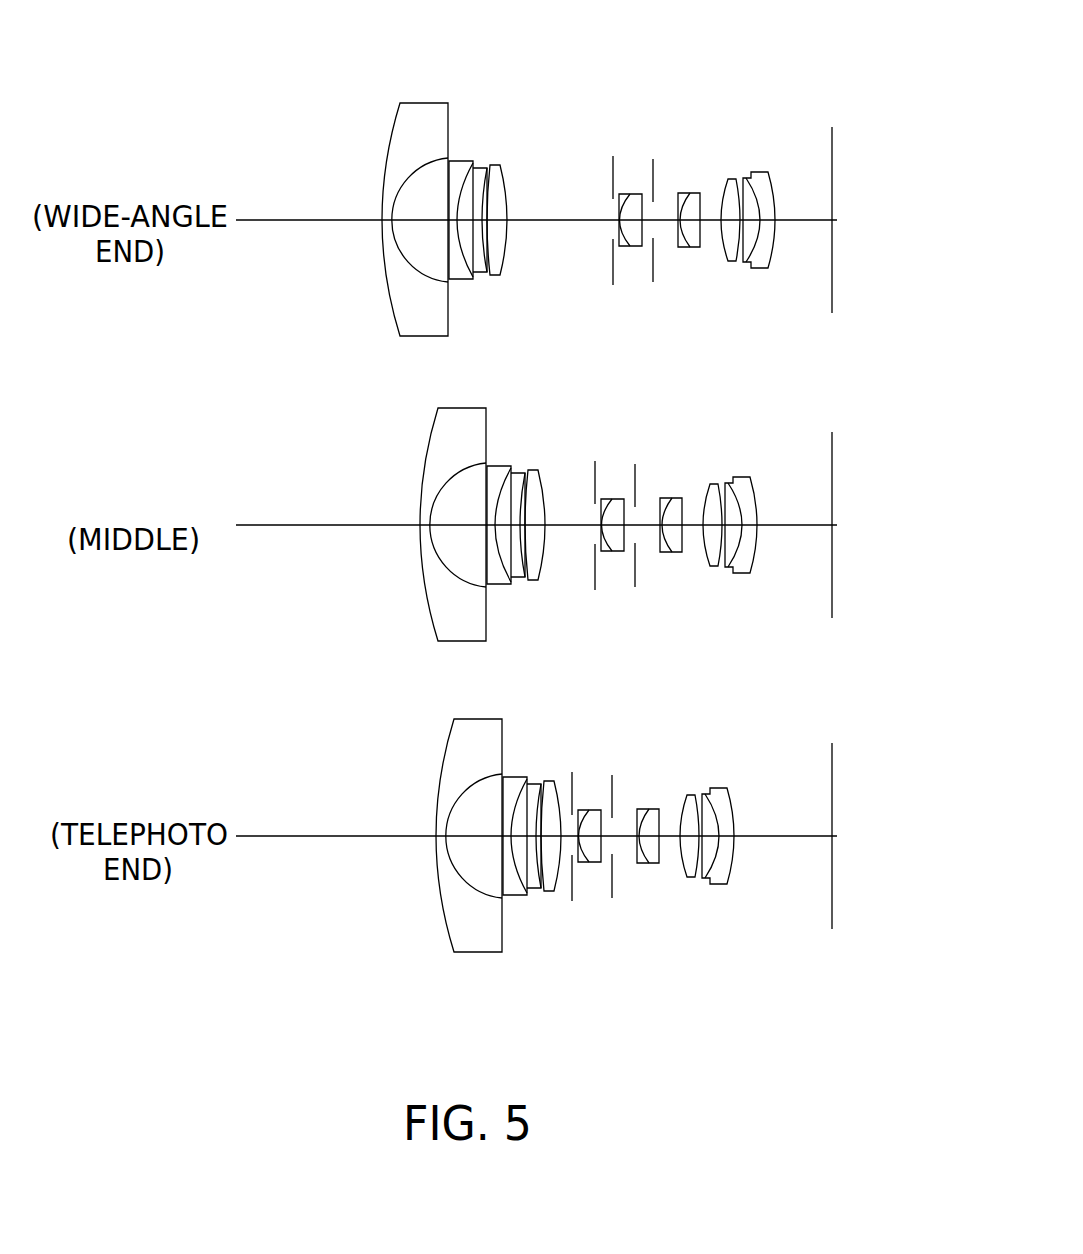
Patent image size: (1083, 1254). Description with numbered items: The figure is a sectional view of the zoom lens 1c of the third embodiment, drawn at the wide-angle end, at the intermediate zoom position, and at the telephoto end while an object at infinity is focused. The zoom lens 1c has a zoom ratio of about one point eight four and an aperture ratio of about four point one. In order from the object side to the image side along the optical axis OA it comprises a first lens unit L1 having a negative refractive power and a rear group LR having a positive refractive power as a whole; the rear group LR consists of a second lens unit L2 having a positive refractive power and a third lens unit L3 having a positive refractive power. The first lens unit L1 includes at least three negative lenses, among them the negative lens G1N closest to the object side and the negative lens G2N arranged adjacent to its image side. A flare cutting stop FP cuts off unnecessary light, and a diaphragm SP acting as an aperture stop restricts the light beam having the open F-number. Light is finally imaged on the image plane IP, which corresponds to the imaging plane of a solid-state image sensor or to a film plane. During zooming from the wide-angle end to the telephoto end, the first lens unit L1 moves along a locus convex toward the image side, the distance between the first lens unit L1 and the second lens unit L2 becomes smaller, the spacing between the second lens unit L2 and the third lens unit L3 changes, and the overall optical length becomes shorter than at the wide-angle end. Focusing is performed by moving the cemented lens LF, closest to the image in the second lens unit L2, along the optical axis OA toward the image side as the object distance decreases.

The zoom lens 1c is at (914, 60).
The first lens unit L1 is at (520, 87).
The rear group LR is at (808, 87).
The second lens unit L2 is at (707, 127).
The third lens unit L3 is at (798, 127).
The image plane IP is at (828, 183).
The optical axis OA is at (536, 572).
The negative lens G1N is at (425, 970).
The negative lens G2N is at (520, 937).
The flare cutting stop FP is at (613, 266).
The diaphragm SP is at (653, 266).
The cemented lens LF is at (676, 285).